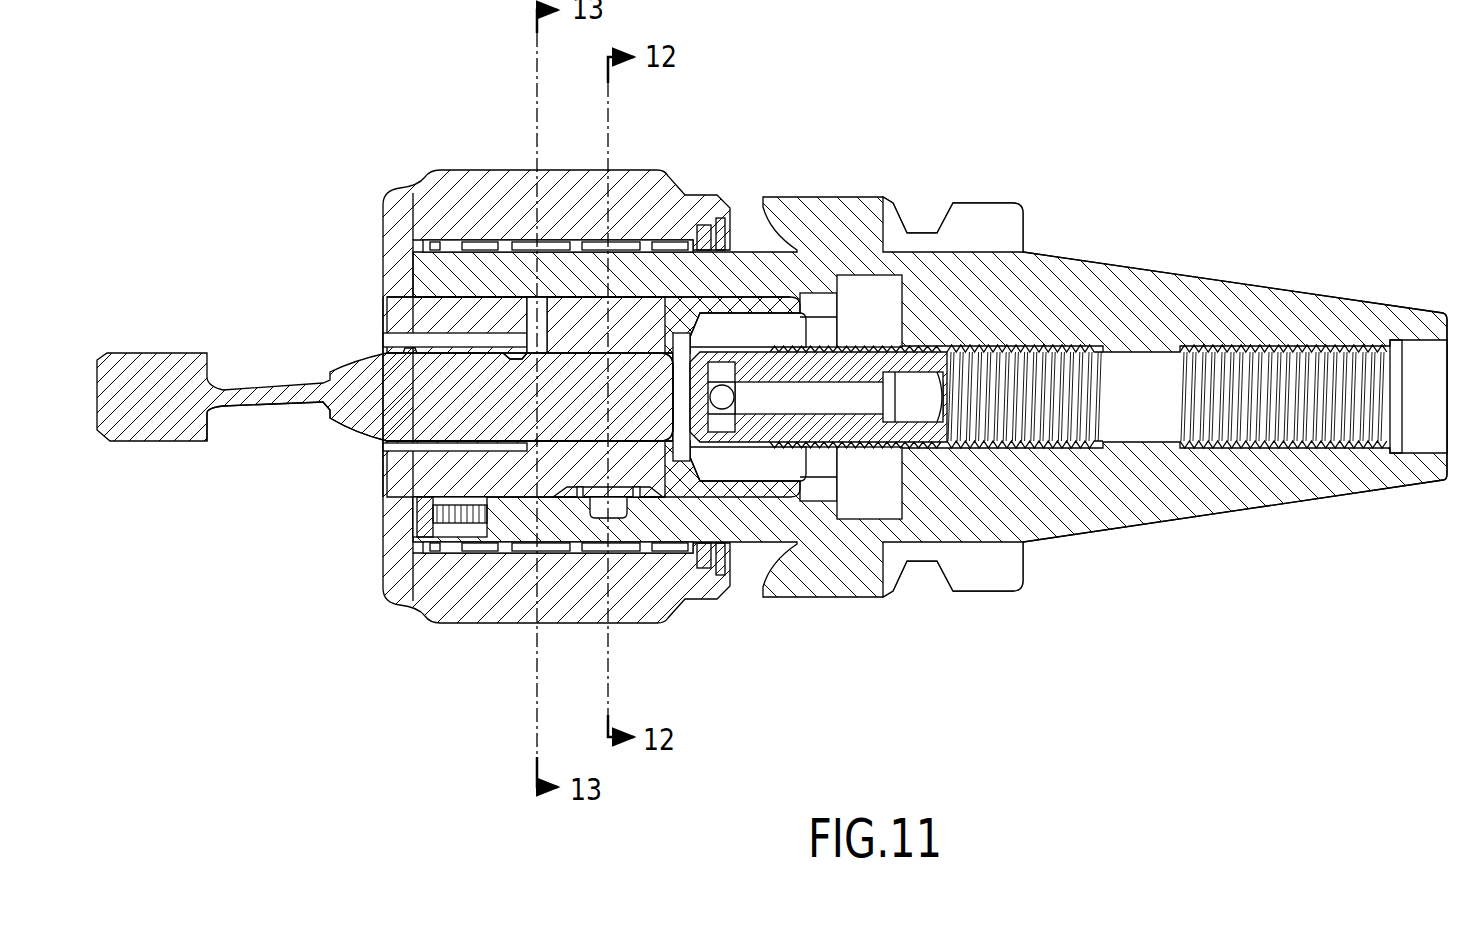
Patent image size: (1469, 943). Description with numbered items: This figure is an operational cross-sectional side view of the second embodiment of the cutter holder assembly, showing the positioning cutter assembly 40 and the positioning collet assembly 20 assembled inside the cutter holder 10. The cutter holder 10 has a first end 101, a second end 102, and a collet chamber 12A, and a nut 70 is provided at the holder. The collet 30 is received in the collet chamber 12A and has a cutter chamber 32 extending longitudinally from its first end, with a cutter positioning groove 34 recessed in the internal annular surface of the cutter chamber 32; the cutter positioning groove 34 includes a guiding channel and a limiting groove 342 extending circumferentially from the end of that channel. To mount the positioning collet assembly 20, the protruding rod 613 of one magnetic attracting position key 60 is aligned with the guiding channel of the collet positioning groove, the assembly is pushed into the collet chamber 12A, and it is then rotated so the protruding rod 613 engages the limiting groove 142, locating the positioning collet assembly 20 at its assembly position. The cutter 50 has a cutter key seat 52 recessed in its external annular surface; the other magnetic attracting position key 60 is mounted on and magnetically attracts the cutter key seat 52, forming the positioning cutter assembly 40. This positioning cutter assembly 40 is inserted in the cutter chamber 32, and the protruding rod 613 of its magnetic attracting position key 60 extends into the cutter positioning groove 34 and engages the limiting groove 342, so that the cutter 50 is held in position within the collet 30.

The cutter holder 10 is at (1119, 560).
The positioning collet assembly 20 is at (740, 496).
The collet 30 is at (381, 307).
The cutter chamber 32 is at (407, 443).
The cutter positioning groove 34 is at (455, 345).
The positioning cutter assembly 40 is at (685, 355).
The cutter 50 is at (178, 352).
The cutter key seat 52 is at (520, 355).
The magnetic attracting position key 60 is at (628, 500).
The nut 70 is at (657, 197).
The first end 101 is at (533, 322).
The second end 102 is at (1450, 322).
The limiting groove 142 is at (610, 525).
The limiting groove 342 is at (447, 300).
The protruding rod 613 is at (613, 508).
The collet chamber 12A is at (415, 510).